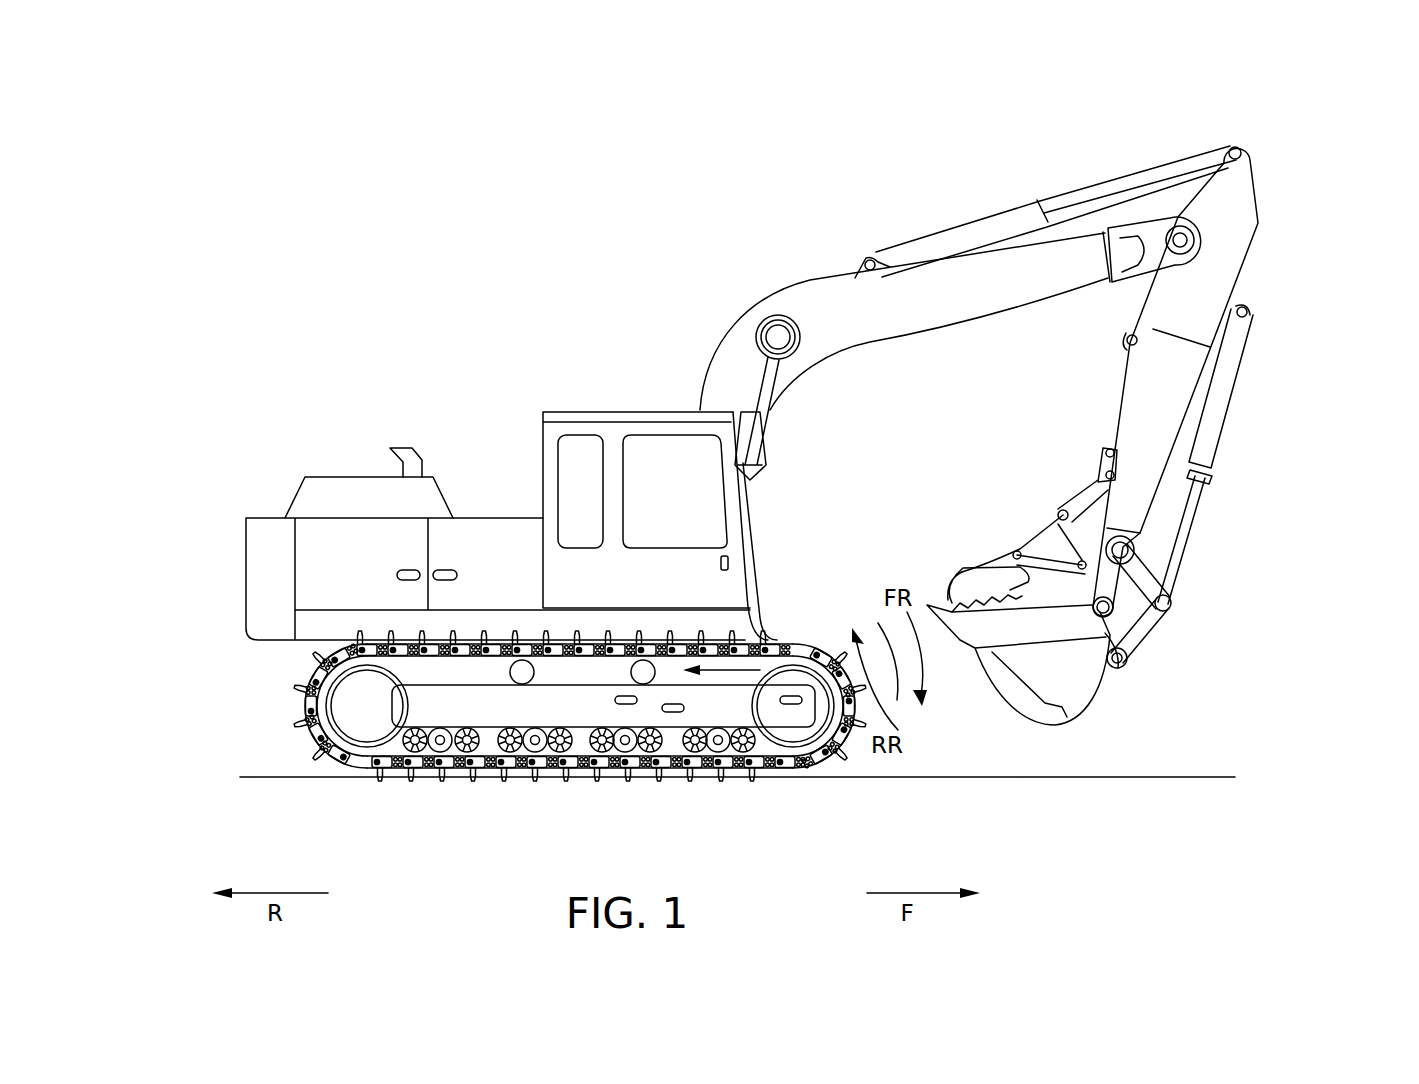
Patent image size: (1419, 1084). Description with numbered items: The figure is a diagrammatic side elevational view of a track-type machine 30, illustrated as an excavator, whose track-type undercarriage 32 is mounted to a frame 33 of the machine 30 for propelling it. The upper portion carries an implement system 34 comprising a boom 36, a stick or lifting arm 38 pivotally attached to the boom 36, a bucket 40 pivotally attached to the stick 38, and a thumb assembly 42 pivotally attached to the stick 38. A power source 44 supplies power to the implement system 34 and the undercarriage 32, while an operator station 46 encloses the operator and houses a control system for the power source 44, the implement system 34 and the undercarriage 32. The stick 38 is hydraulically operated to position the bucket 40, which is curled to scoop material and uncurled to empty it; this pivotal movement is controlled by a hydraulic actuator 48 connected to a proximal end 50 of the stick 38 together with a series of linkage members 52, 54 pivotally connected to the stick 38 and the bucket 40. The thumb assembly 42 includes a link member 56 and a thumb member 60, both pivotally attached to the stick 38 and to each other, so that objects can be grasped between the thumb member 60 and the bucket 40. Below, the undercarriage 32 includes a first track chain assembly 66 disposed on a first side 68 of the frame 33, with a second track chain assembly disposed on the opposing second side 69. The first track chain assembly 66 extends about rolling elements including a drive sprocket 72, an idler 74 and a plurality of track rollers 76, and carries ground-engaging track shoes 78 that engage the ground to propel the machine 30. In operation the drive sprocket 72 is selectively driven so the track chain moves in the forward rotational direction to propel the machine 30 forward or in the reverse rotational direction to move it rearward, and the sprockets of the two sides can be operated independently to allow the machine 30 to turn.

The machine 30 is at (332, 380).
The track-type undercarriage 32 is at (303, 695).
The frame 33 is at (420, 672).
The implement system 34 is at (1262, 142).
The boom 36 is at (805, 310).
The stick or lifting arm 38 is at (1228, 270).
The bucket 40 is at (1073, 688).
The thumb assembly 42 is at (1010, 513).
The power source 44 is at (293, 490).
The operator station 46 is at (640, 433).
The hydraulic actuator 48 is at (1215, 418).
The proximal end 50 is at (1243, 293).
The linkage member 52 is at (1147, 577).
The linkage member 54 is at (1147, 625).
The link member 56 is at (1078, 493).
The thumb member 60 is at (957, 582).
The first track chain assembly 66 is at (496, 800).
The first side 68 is at (783, 652).
The second side 69 is at (779, 608).
The drive sprocket 72 is at (797, 738).
The idler 74 is at (362, 702).
The track rollers 76 is at (460, 787).
The ground-engaging track shoes 78 is at (455, 636).